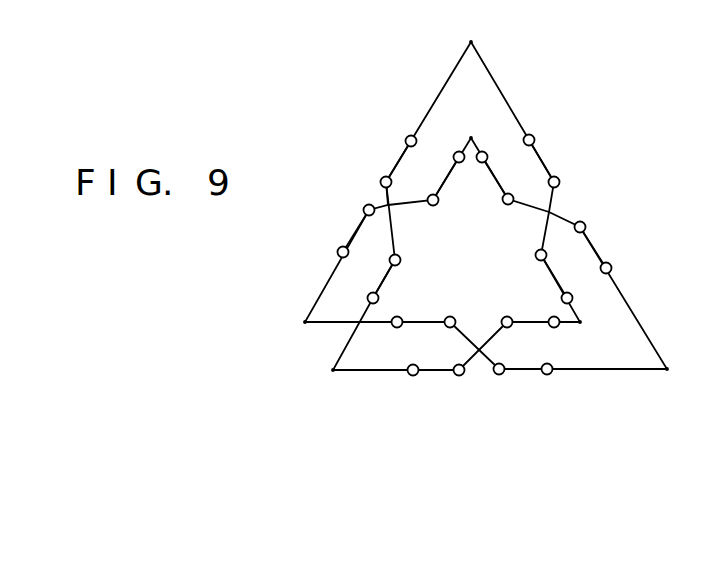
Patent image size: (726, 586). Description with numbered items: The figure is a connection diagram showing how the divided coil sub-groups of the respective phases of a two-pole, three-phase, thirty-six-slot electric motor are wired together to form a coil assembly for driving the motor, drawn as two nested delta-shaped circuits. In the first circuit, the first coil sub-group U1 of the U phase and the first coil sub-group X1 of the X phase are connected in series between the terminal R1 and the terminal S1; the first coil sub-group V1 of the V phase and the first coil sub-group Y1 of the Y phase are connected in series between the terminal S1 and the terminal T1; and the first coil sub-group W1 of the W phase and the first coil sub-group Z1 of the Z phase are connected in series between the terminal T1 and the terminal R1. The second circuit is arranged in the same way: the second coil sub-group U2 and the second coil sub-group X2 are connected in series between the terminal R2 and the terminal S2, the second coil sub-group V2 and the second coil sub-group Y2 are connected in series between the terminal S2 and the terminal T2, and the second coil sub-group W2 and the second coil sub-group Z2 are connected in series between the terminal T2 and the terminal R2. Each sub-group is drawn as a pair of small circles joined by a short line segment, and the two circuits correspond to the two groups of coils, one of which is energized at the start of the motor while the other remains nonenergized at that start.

The terminal of the first circuit R1 is at (472, 128).
The terminal of the second circuit R2 is at (473, 28).
The terminal of the first circuit S1 is at (681, 370).
The terminal of the second circuit S2 is at (594, 322).
The terminal of the first circuit T1 is at (292, 322).
The terminal of the second circuit T2 is at (318, 371).
The first coil sub-group of the U phase U1 is at (500, 178).
The second coil sub-group of the U phase U2 is at (548, 161).
The first coil sub-group of the V phase V1 is at (523, 381).
The second coil sub-group of the V phase V2 is at (531, 334).
The first coil sub-group of the W phase W1 is at (350, 231).
The second coil sub-group of the W phase W2 is at (394, 279).
The first coil sub-group of the X phase X1 is at (600, 248).
The second coil sub-group of the X phase X2 is at (558, 277).
The first coil sub-group of the Y phase Y1 is at (424, 334).
The second coil sub-group of the Y phase Y2 is at (436, 381).
The first coil sub-group of the Z phase Z1 is at (452, 179).
The second coil sub-group of the Z phase Z2 is at (393, 162).